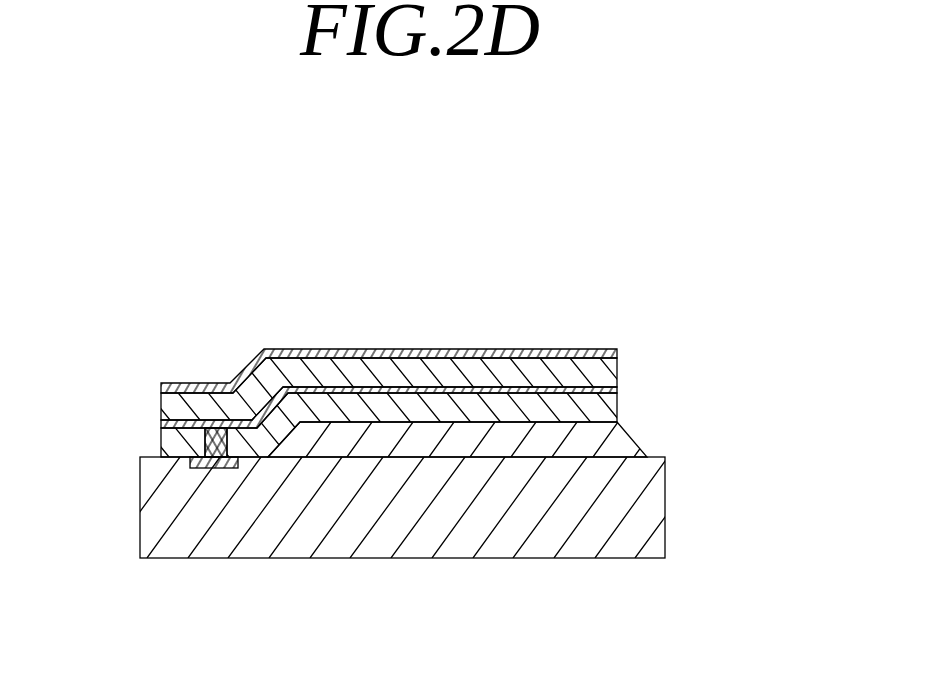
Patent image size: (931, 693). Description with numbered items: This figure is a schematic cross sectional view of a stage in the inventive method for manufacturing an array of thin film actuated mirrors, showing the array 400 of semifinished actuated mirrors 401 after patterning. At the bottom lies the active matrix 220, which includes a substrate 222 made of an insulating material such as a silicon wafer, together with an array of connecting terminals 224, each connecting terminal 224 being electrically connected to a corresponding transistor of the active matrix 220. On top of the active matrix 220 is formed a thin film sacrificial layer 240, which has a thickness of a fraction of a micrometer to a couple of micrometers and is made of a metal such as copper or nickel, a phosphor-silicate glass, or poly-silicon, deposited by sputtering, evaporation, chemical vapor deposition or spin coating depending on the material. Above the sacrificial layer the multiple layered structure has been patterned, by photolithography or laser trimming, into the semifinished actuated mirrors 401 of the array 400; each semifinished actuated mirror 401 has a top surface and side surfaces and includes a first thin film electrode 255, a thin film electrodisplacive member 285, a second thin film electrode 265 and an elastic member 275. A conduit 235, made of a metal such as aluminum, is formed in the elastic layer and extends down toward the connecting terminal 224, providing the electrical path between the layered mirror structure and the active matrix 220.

The array of semifinished actuated mirrors 400 is at (757, 162).
The semifinished actuated mirror 401 is at (612, 192).
The active matrix 220 is at (678, 459).
The substrate 222 is at (375, 558).
The connecting terminal 224 is at (205, 463).
The conduit 235 is at (218, 444).
The thin film sacrificial layer 240 is at (623, 445).
The first thin film electrode 255 is at (330, 352).
The second thin film electrode 265 is at (375, 386).
The elastic member 275 is at (540, 405).
The thin film electrodisplacive member 285 is at (465, 375).